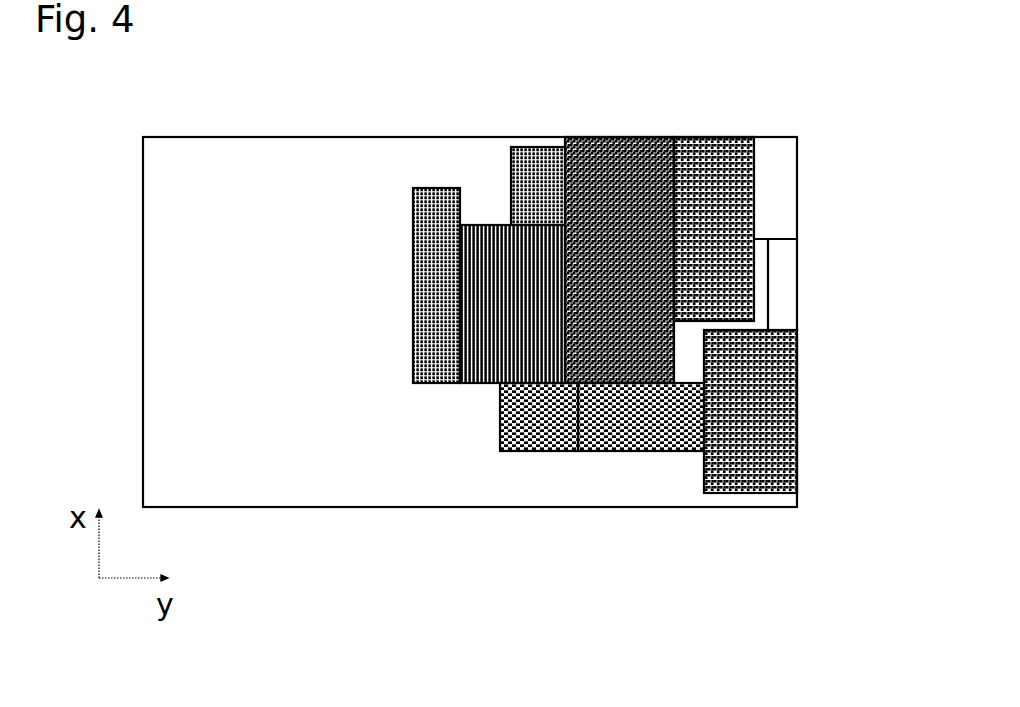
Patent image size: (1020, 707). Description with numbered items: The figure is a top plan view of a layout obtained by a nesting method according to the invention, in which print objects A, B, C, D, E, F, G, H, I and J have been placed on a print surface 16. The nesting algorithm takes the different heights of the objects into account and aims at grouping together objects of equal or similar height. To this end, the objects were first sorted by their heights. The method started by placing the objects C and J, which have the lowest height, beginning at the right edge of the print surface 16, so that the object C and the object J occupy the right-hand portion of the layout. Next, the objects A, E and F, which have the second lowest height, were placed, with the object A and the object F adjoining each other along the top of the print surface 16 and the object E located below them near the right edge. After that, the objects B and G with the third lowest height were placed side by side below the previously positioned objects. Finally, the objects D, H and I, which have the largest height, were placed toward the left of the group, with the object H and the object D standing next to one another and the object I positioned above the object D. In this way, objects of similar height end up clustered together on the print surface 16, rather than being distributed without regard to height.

The print surface 16 is at (241, 183).
The print object A is at (615, 150).
The print object B is at (540, 430).
The print object C is at (780, 178).
The print object D is at (500, 362).
The print object E is at (780, 408).
The print object F is at (718, 150).
The print object G is at (655, 430).
The print object H is at (440, 314).
The print object I is at (540, 150).
The print object J is at (780, 287).